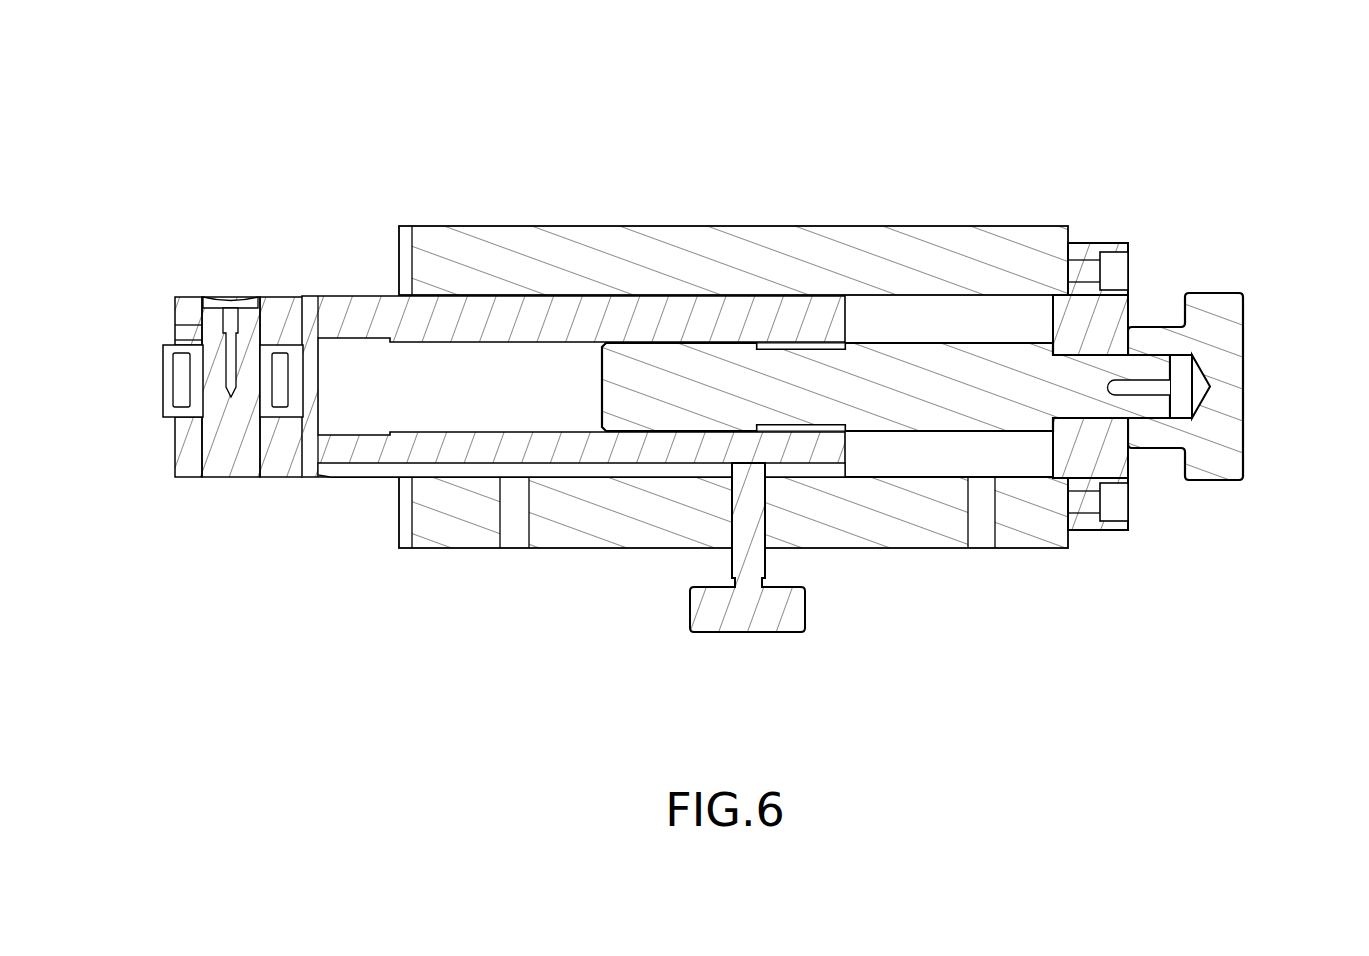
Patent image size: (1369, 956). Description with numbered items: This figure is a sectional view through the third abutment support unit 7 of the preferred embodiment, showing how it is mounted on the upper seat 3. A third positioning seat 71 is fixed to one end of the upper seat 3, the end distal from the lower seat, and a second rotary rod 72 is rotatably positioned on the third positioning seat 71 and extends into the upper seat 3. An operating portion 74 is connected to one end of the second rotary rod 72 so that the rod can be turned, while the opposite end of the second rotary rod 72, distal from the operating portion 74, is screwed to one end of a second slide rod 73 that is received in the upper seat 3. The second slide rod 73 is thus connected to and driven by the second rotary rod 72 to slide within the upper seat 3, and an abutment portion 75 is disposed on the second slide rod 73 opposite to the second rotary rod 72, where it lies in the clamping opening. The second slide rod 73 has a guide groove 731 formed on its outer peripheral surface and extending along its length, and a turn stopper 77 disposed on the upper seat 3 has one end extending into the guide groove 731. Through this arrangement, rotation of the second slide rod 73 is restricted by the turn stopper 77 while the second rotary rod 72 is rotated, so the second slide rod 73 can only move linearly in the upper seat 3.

The upper seat 3 is at (826, 223).
The third abutment support unit 7 is at (705, 426).
The third positioning seat 71 is at (1077, 297).
The second rotary rod 72 is at (935, 410).
The second slide rod 73 is at (346, 302).
The guide groove 731 is at (381, 470).
The operating portion 74 is at (1238, 362).
The abutment portion 75 is at (185, 458).
The turn stopper 77 is at (750, 622).